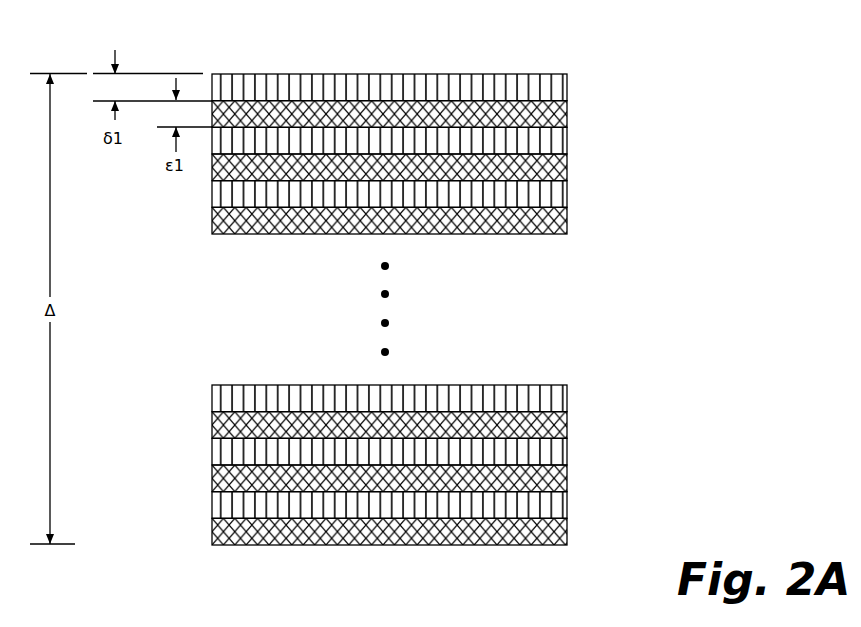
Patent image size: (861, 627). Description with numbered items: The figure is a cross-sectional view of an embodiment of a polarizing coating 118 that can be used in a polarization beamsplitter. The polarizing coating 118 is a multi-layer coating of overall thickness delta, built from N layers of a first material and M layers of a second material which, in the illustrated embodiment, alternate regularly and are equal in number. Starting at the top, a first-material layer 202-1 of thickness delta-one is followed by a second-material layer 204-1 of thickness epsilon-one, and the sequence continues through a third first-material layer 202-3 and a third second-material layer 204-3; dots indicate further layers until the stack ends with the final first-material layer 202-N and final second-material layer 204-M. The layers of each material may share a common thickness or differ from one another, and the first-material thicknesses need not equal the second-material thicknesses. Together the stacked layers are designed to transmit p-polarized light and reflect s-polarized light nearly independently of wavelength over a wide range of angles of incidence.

The layer of first material 202-1 is at (323, 82).
The layer of second material 204-1 is at (405, 107).
The layer of first material 202-3 is at (220, 197).
The layer of second material 204-3 is at (558, 222).
The layer of first material 202-N is at (297, 497).
The layer of second material 204-M is at (455, 524).
The polarizing coating 118 is at (663, 207).